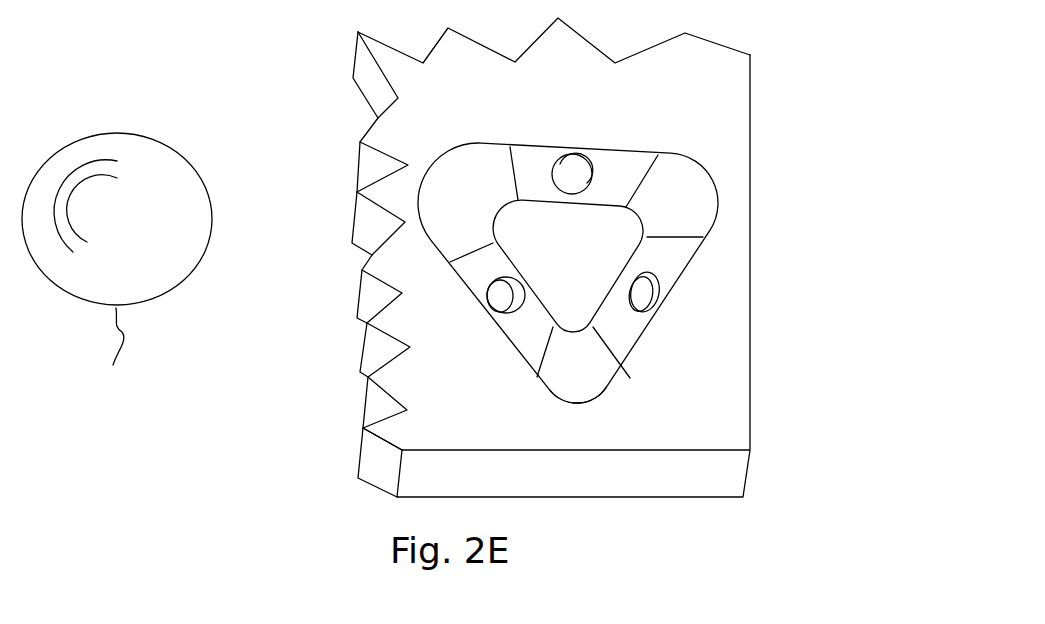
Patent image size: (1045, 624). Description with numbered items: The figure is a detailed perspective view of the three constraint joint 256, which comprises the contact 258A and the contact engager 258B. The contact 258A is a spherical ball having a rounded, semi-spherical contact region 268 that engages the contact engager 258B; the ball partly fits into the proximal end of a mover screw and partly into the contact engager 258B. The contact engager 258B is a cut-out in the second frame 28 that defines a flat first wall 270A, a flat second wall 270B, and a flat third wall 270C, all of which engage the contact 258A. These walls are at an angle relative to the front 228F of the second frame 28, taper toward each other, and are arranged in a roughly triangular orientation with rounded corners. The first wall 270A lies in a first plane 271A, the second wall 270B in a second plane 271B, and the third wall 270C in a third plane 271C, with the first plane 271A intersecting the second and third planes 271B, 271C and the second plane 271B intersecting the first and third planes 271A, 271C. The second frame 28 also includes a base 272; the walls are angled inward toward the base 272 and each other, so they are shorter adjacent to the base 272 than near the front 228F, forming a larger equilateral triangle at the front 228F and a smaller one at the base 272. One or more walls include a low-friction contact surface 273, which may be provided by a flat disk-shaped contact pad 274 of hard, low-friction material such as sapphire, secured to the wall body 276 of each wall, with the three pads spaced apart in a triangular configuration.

The second frame 28 is at (735, 88).
The front of the second frame 228F is at (732, 113).
The three constraint joint 256 is at (277, 62).
The contact 258A is at (143, 172).
The contact engager 258B is at (542, 173).
The contact region 268 is at (101, 355).
The first wall 270A is at (630, 168).
The second wall 270B is at (665, 250).
The third wall 270C is at (535, 335).
The first plane 271A is at (628, 187).
The second plane 271B is at (683, 263).
The third plane 271C is at (537, 347).
The base 272 is at (542, 269).
The contact surface 273 is at (498, 284).
The contact pad 274 is at (512, 297).
The wall body 276 is at (512, 332).